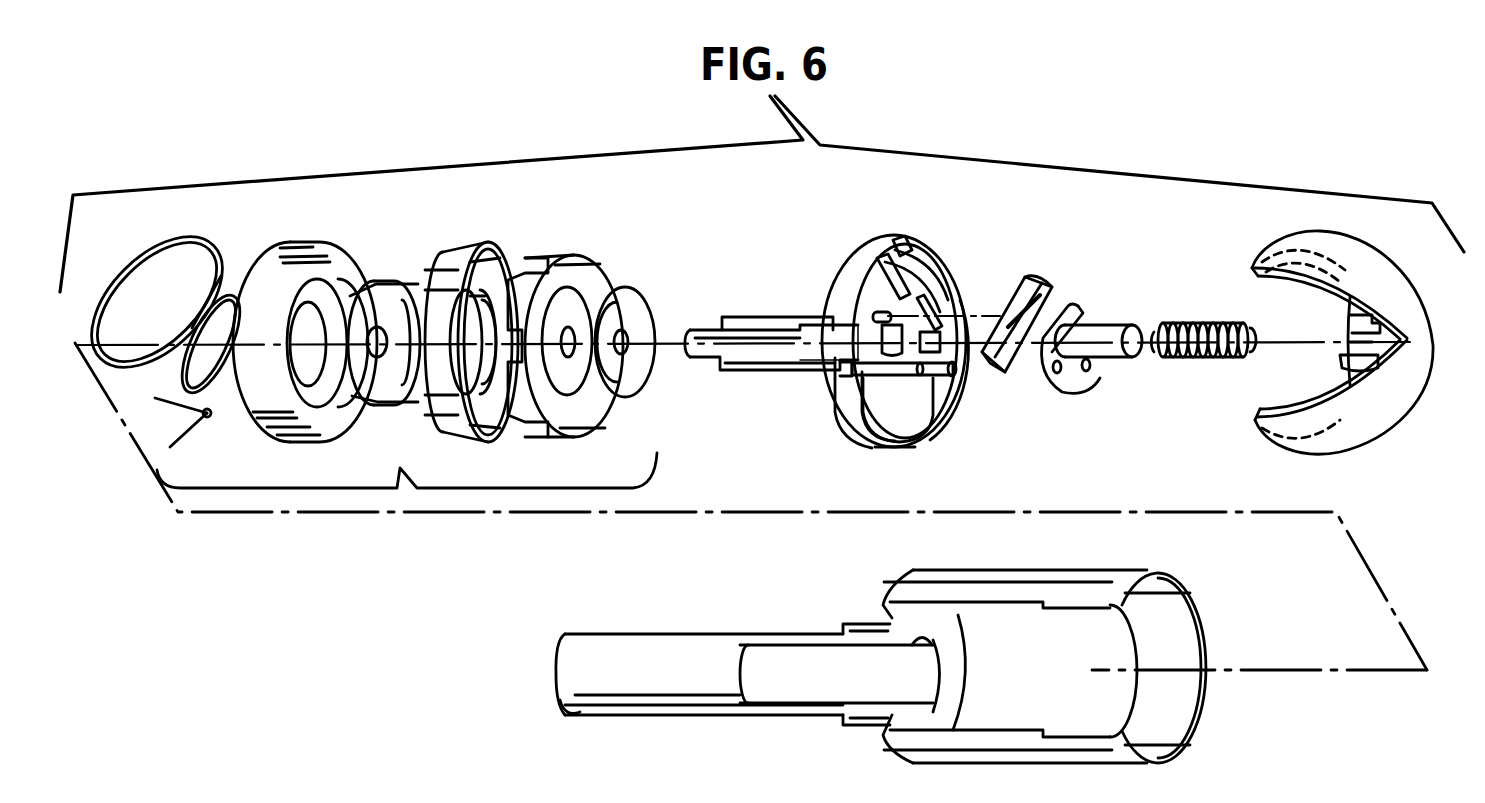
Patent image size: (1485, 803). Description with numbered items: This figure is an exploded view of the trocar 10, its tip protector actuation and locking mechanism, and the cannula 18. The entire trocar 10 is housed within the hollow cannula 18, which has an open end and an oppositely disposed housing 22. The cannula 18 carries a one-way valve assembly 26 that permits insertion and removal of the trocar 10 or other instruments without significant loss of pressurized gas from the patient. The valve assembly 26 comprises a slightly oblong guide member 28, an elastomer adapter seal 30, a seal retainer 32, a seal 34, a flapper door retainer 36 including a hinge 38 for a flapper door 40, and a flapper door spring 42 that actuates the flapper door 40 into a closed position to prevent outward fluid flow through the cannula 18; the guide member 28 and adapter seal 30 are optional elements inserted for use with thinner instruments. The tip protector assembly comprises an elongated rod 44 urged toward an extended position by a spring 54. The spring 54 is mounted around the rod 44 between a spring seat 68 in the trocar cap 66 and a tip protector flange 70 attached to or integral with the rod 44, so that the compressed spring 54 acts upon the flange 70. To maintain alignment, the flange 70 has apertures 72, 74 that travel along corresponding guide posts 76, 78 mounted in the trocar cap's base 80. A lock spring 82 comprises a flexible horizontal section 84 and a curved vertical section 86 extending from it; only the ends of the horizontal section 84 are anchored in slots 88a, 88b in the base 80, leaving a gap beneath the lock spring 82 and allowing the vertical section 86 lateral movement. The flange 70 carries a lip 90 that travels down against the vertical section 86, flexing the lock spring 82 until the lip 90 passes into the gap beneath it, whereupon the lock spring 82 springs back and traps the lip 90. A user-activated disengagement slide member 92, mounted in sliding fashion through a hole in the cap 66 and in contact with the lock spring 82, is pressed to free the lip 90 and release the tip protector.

The trocar 10 is at (767, 318).
The cannula 18 is at (684, 648).
The housing 22 is at (1108, 588).
The one-way valve assembly 26 is at (406, 454).
The guide member 28 is at (636, 310).
The elastomer adapter seal 30 is at (582, 260).
The seal retainer 32 is at (458, 260).
The seal 34 is at (380, 284).
The flapper door retainer 36 is at (290, 436).
The hinge 38 is at (305, 337).
The flapper door 40 is at (212, 262).
The flapper door spring 42 is at (208, 417).
The elongated rod 44 is at (704, 348).
The spring 54 is at (1226, 358).
The trocar cap 66 is at (1345, 342).
The spring seat 68 is at (1352, 312).
The tip protector flange 70 is at (1094, 372).
The aperture 72 is at (1098, 368).
The aperture 74 is at (1064, 374).
The guide post 76 is at (956, 374).
The guide post 78 is at (898, 377).
The trocar cap base 80 is at (922, 355).
The lock spring 82 is at (905, 284).
The horizontal section 84 is at (915, 302).
The vertical section 86 is at (905, 318).
The slot 88a is at (905, 246).
The slot 88b is at (937, 425).
The lip 90 is at (1078, 322).
The disengagement slide member 92 is at (1052, 284).